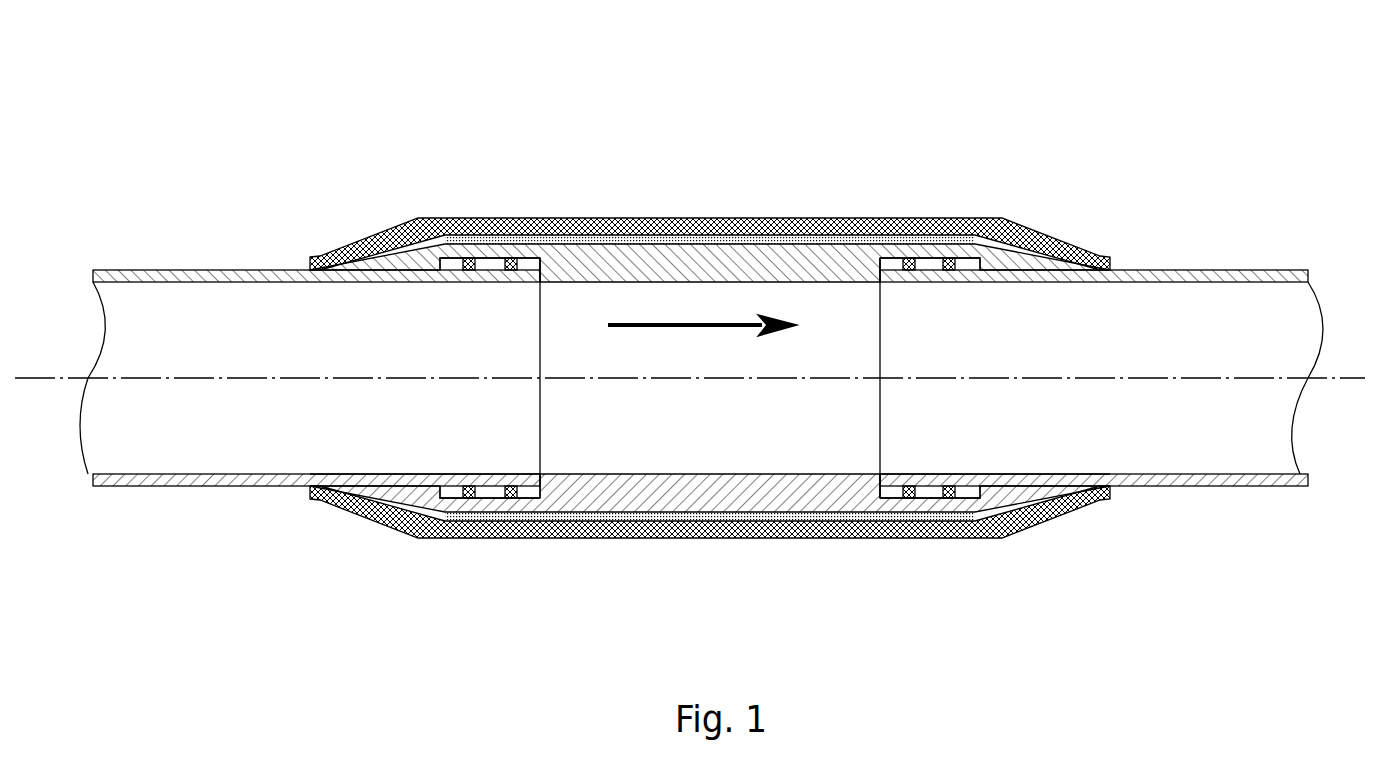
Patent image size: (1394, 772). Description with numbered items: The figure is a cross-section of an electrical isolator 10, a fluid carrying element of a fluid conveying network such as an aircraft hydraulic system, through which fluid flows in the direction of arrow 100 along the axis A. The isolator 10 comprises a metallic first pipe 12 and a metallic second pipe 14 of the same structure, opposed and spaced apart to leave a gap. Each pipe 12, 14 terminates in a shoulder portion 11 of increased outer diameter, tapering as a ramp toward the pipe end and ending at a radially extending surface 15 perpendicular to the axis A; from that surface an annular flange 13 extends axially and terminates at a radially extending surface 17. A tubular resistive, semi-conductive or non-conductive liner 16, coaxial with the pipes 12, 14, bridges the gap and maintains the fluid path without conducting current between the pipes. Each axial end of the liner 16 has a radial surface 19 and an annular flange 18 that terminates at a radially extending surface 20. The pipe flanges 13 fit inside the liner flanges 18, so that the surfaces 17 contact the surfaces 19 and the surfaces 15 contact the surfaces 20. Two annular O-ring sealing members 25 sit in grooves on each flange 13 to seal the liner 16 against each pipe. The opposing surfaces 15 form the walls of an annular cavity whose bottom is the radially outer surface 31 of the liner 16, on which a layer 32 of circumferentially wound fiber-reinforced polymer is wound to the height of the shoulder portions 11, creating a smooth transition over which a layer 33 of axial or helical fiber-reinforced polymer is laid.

The electrical isolator 10 is at (1240, 97).
The shoulder portion 11 is at (400, 483).
The first pipe 12 is at (190, 270).
The annular flange 13 is at (495, 478).
The second pipe 14 is at (1192, 270).
The radially extending surface 15 is at (438, 505).
The liner 16 is at (693, 262).
The radially extending surface 17 is at (877, 488).
The annular flange 18 is at (452, 250).
The radial surface 19 is at (538, 272).
The radially extending surface 20 is at (438, 247).
The sealing member 25 is at (468, 264).
The radially outer surface 31 is at (652, 510).
The layer of circumferentially wound fiber-reinforced polymer 32 is at (762, 515).
The layer of axial or helical fiber-reinforced polymer 33 is at (570, 540).
The arrow 100 is at (657, 329).
The axis A is at (1338, 382).